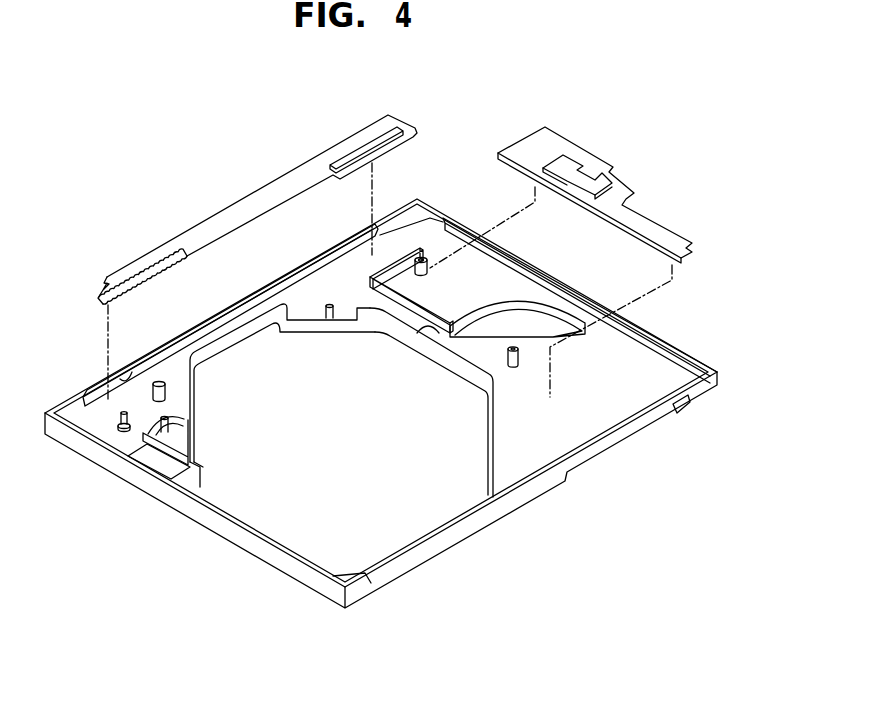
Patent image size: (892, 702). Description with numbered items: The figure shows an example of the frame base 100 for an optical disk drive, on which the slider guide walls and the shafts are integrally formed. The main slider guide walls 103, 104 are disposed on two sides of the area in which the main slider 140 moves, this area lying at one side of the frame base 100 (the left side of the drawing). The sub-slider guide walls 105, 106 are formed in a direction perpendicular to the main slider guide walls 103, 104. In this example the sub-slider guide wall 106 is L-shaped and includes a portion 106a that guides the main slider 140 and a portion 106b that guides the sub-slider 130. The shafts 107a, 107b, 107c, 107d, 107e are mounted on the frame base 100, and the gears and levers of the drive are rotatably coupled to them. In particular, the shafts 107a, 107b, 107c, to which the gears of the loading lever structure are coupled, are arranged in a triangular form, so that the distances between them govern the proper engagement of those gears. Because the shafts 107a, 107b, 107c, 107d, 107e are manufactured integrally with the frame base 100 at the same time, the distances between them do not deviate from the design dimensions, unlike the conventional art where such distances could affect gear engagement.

The frame base 100 is at (688, 400).
The main slider guide wall 103 is at (197, 330).
The main slider guide wall 104 is at (240, 330).
The sub-slider guide wall 105 is at (424, 333).
The sub-slider guide wall 106 is at (430, 238).
The portion guiding the main slider 106a is at (400, 253).
The portion guiding the sub-slider 106b is at (437, 310).
The shaft 107a is at (158, 382).
The shaft 107b is at (186, 418).
The shaft 107c is at (123, 410).
The shaft 107d is at (515, 347).
The shaft 107e is at (328, 303).
The sub-slider 130 is at (641, 184).
The main slider 140 is at (223, 210).